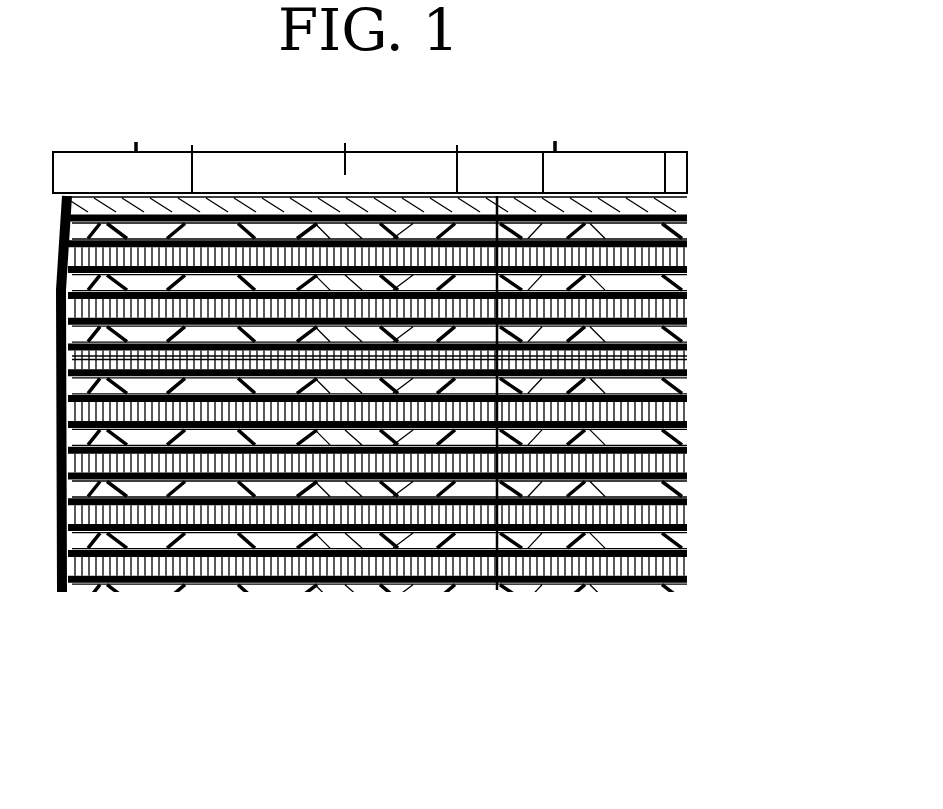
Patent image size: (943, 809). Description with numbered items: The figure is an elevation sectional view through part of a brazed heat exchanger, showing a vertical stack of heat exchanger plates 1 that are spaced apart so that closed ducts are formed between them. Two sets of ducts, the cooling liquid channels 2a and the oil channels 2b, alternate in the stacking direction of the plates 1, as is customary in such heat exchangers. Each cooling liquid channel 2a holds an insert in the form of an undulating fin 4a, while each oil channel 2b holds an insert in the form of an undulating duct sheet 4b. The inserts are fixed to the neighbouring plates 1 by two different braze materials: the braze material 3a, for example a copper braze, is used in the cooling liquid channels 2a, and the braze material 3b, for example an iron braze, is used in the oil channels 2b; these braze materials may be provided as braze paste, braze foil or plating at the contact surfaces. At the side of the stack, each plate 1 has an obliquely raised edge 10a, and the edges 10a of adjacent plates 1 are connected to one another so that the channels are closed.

The heat exchanger plate 1 is at (690, 316).
The cooling liquid channel 2a is at (433, 439).
The oil channel 2b is at (434, 455).
The braze material 3a is at (690, 350).
The braze material 3b is at (660, 383).
The undulating fin 4a is at (417, 513).
The undulating duct sheet 4b is at (280, 540).
The obliquely raised edge 10a is at (61, 572).